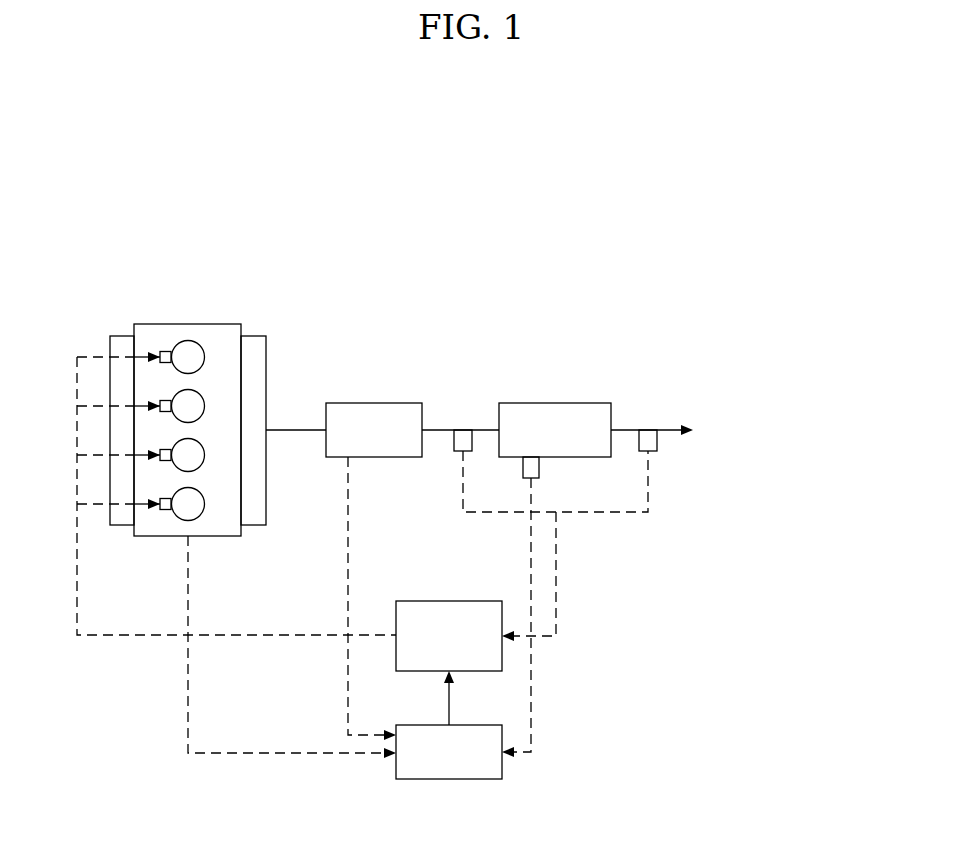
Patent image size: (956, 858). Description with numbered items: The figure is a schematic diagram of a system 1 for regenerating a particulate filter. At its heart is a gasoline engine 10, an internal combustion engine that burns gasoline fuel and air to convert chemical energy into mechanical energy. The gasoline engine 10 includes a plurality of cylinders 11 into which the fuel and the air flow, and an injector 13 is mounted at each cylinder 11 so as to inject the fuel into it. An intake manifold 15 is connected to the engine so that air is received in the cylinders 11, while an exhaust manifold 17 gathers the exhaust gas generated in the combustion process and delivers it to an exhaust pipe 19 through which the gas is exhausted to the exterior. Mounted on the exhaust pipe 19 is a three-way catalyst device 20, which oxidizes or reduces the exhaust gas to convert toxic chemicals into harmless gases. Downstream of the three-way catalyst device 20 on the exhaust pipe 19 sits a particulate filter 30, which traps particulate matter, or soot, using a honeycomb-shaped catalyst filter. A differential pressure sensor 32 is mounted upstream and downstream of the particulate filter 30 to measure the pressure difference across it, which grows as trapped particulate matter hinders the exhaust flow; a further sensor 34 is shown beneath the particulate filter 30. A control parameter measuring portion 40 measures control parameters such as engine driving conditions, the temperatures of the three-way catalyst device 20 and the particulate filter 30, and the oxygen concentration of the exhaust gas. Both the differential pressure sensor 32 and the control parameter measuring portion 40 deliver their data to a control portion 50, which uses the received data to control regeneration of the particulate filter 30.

The system for regenerating a particulate filter 1 is at (455, 143).
The gasoline engine 10 is at (194, 230).
The cylinders 11 is at (188, 341).
The injector 13 is at (165, 350).
The intake manifold 15 is at (115, 336).
The exhaust manifold 17 is at (255, 336).
The exhaust pipe 19 is at (296, 430).
The three-way catalyst device 20 is at (372, 403).
The particulate filter 30 is at (554, 403).
The differential pressure sensor 32 is at (463, 438).
The pressure difference sensor 34 is at (541, 472).
The control parameter measuring portion 40 is at (449, 779).
The control portion 50 is at (449, 601).